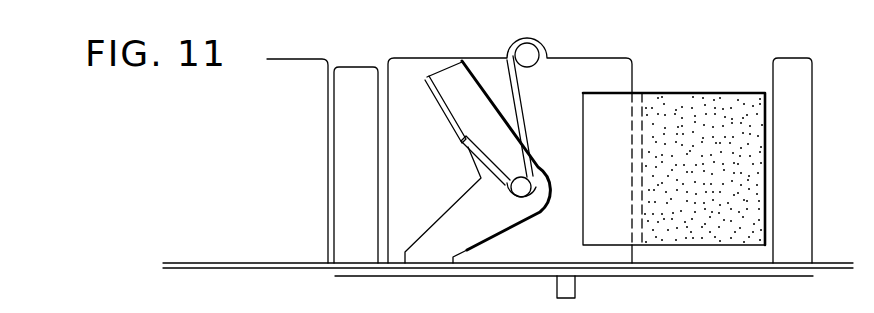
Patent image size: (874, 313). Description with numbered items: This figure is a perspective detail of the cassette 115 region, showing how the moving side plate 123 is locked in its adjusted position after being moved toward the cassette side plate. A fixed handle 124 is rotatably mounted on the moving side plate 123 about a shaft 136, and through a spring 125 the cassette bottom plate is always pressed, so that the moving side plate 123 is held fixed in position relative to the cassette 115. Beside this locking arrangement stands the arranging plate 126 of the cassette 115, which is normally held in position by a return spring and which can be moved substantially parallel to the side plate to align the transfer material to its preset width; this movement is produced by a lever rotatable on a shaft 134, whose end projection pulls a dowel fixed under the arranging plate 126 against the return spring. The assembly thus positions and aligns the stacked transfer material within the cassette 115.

The cassette 115 is at (423, 263).
The moving side plate 123 is at (408, 70).
The fixed handle 124 is at (460, 77).
The spring 125 is at (522, 93).
The arranging plate 126 is at (357, 80).
The shaft 134 is at (575, 288).
The shaft 136 is at (525, 195).